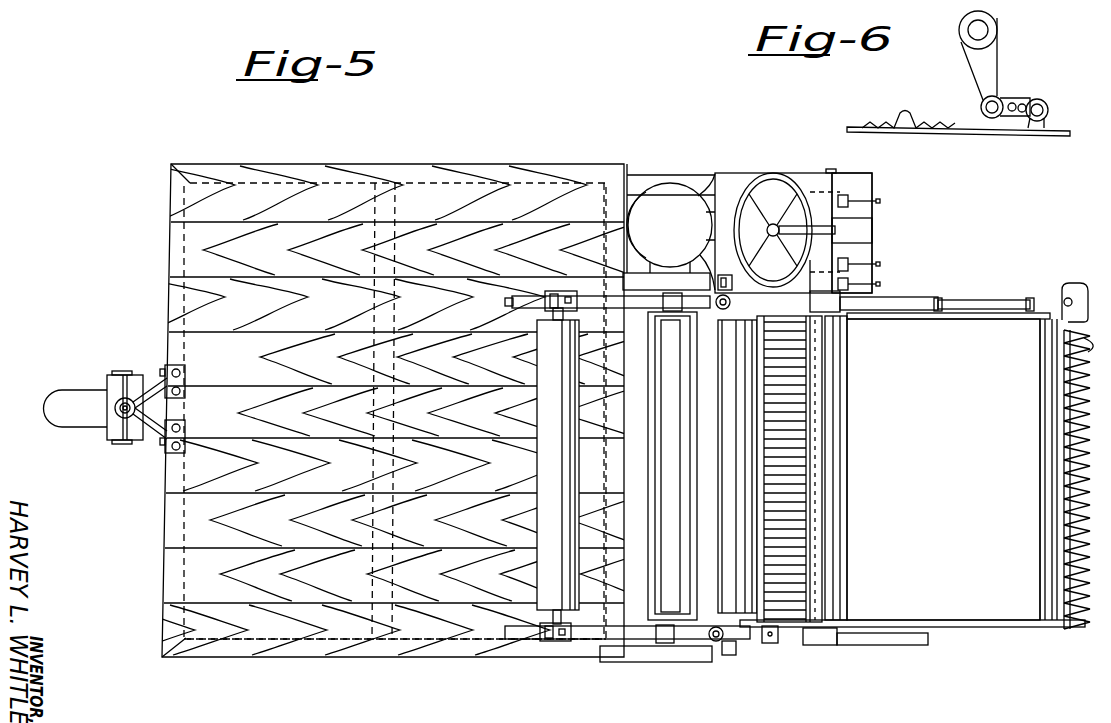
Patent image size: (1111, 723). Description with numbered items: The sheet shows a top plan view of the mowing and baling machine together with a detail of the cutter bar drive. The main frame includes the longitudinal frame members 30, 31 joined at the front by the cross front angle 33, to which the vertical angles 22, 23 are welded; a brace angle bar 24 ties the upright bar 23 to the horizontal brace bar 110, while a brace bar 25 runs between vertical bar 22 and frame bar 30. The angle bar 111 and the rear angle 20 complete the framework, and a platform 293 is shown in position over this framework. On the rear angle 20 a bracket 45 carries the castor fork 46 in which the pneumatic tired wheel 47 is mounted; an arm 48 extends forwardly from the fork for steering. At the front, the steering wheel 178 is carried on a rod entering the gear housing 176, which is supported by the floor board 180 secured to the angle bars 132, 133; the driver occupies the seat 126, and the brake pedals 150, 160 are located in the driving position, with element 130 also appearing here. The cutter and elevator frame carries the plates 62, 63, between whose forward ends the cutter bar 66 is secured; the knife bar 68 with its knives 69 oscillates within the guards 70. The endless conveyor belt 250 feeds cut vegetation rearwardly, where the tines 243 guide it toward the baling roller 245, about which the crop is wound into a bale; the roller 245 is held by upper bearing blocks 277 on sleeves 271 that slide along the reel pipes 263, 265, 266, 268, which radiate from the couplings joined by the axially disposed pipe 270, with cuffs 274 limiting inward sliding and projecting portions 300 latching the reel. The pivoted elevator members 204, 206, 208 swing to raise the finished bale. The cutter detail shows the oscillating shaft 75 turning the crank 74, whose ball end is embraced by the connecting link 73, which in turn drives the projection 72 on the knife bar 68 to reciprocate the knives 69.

In FIG. 5, the rear angle 20 is at (189, 521).
In FIG. 5, the platform 293 is at (326, 170).
In FIG. 5, the frame member 31 is at (495, 183).
In FIG. 5, the angle bar 111 is at (395, 521).
In FIG. 5, the frame member 30 is at (316, 640).
In FIG. 5, the pneumatic tired wheel 47 is at (58, 393).
In FIG. 5, the castor fork 46 is at (110, 380).
In FIG. 5, the arm 48 is at (153, 403).
In FIG. 5, the bracket 45 is at (150, 436).
In FIG. 5, the brace angle bar 24 is at (660, 275).
In FIG. 5, the seat 126 is at (669, 228).
In FIG. 5, the cross front angle 33 is at (712, 190).
In FIG. 5, the angle bar 132 is at (731, 172).
In FIG. 5, the steering wheel 178 is at (770, 178).
In FIG. 5, the floor board 180 is at (872, 178).
In FIG. 5, the gear housing 176 is at (874, 230).
In FIG. 5, the switch 130 is at (880, 201).
In FIG. 5, the brake pedal 150 is at (880, 263).
In FIG. 5, the brake pedal 160 is at (880, 284).
In FIG. 5, the angle bar 133 is at (812, 271).
In FIG. 5, the vertical angle 23 is at (735, 280).
In FIG. 5, the horizontal brace bar 110 is at (604, 266).
In FIG. 5, the pipe 268 is at (636, 305).
In FIG. 5, the projecting portion 300 is at (505, 302).
In FIG. 5, the upper bearing block 277 is at (557, 296).
In FIG. 5, the roller 245 is at (537, 470).
In FIG. 5, the member 206 is at (650, 525).
In FIG. 5, the member 208 is at (686, 492).
In FIG. 5, the member 204 is at (650, 470).
In FIG. 5, the cuff 274 is at (672, 311).
In FIG. 5, the axially disposed pipe 270 is at (718, 325).
In FIG. 5, the vertical angle 22 is at (722, 641).
In FIG. 5, the pipe 263 is at (636, 626).
In FIG. 5, the brace bar 25 is at (672, 663).
In FIG. 5, the tines 243 is at (818, 520).
In FIG. 5, the sleeve 271 is at (845, 309).
In FIG. 5, the pipe 266 is at (912, 310).
In FIG. 5, the pipe 265 is at (900, 646).
In FIG. 5, the oscillating shaft 75 is at (982, 300).
In FIG. 6, the oscillating shaft 75 is at (996, 28).
In FIG. 5, the plate 63 is at (975, 320).
In FIG. 5, the plate 62 is at (957, 621).
In FIG. 5, the endless conveyor belt 250 is at (943, 469).
In FIG. 5, the cutter bar 66 is at (1050, 402).
In FIG. 5, the knife bar 68 is at (1063, 300).
In FIG. 6, the knife bar 68 is at (978, 136).
In FIG. 5, the knives 69 is at (1058, 472).
In FIG. 6, the knives 69 is at (905, 118).
In FIG. 5, the guards 70 is at (1094, 336).
In FIG. 6, the crank 74 is at (978, 65).
In FIG. 6, the connecting link 73 is at (1022, 98).
In FIG. 6, the projection 72 is at (1048, 126).